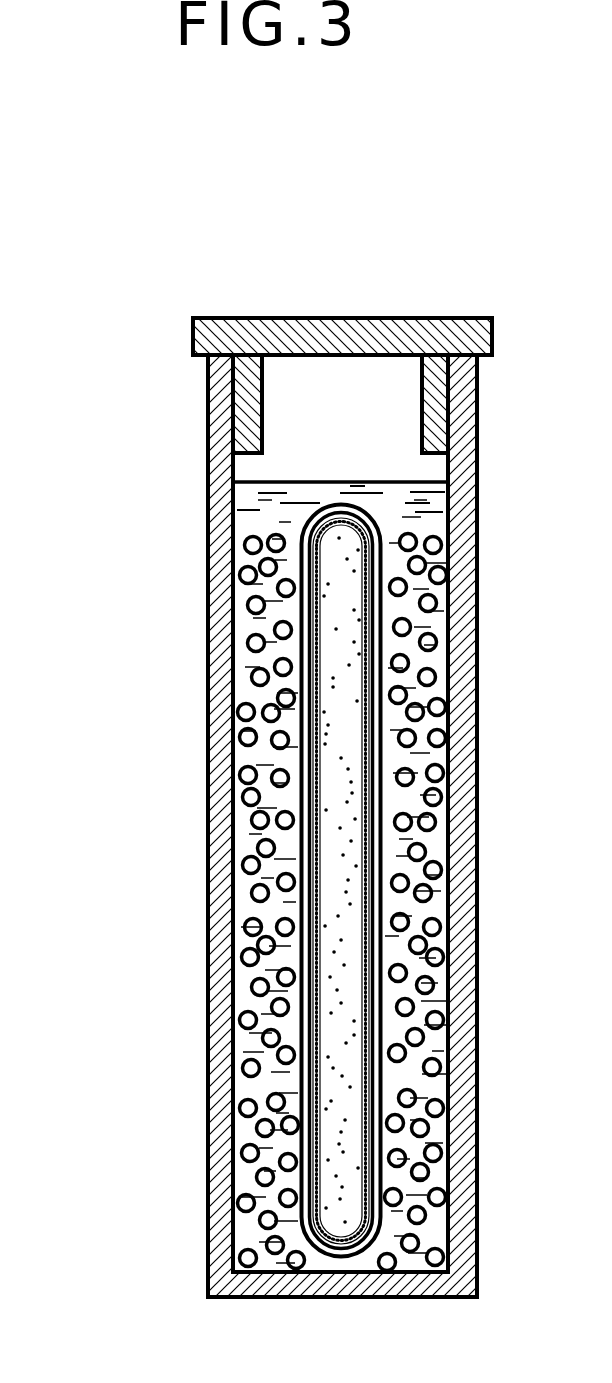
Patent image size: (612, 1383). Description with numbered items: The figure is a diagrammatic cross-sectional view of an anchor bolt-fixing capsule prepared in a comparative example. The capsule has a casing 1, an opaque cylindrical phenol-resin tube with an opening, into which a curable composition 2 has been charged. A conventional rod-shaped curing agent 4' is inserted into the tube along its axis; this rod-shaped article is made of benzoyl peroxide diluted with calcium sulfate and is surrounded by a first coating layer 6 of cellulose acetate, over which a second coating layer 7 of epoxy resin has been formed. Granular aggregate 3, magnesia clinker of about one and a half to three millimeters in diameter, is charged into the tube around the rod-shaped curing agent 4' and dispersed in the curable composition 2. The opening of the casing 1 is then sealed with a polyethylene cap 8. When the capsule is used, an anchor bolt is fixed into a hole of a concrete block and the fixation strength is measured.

The casing 1 is at (207, 453).
The curable composition 2 is at (265, 517).
The aggregate 3 is at (250, 642).
The conventional rod-shaped curing agent 4' is at (214, 881).
The first coating layer 6 is at (315, 850).
The second coating layer 7 is at (277, 949).
The cap 8 is at (343, 318).